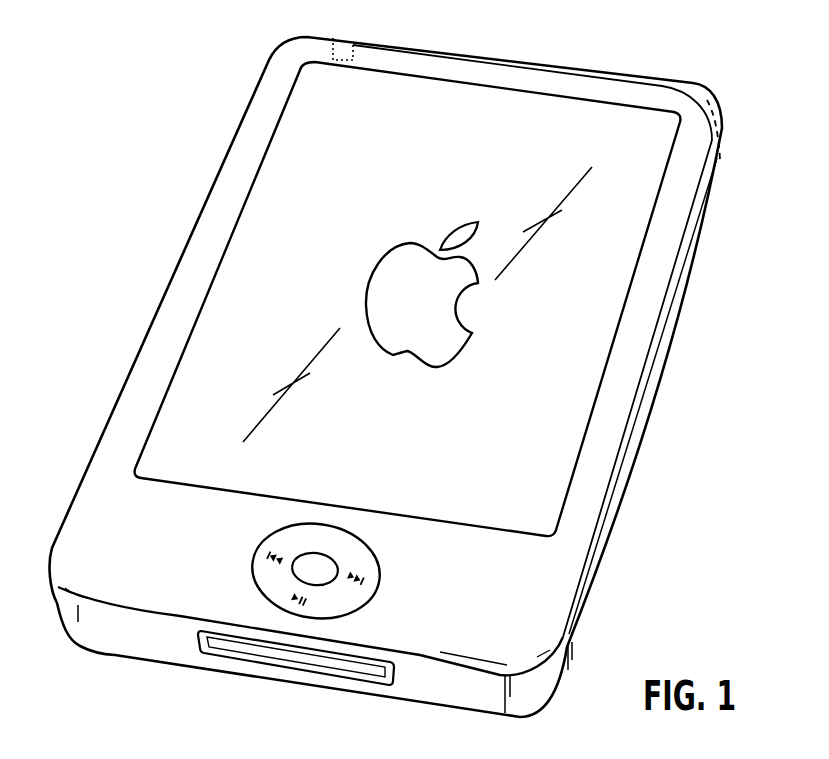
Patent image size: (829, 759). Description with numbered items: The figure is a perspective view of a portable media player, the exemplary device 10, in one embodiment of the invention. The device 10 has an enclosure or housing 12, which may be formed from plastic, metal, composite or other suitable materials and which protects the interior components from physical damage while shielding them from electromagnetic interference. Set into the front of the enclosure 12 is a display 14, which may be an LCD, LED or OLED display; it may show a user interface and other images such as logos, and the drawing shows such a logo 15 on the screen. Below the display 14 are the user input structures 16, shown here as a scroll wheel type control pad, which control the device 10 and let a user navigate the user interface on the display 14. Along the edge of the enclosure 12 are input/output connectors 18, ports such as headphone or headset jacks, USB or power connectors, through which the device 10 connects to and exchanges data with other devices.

The portable media player 10 is at (178, 60).
The enclosure 12 is at (723, 150).
The display 14 is at (587, 108).
The logo 15 is at (375, 268).
The user input structures 16 is at (248, 572).
The input/output connectors 18 is at (337, 37).